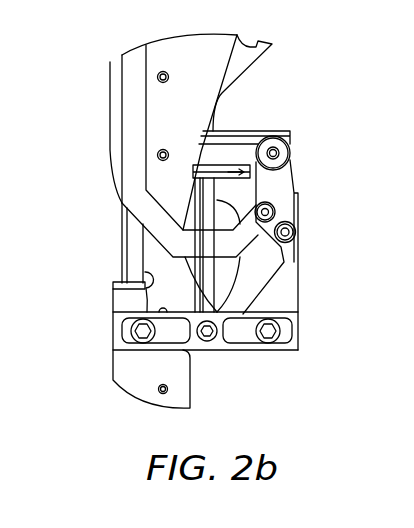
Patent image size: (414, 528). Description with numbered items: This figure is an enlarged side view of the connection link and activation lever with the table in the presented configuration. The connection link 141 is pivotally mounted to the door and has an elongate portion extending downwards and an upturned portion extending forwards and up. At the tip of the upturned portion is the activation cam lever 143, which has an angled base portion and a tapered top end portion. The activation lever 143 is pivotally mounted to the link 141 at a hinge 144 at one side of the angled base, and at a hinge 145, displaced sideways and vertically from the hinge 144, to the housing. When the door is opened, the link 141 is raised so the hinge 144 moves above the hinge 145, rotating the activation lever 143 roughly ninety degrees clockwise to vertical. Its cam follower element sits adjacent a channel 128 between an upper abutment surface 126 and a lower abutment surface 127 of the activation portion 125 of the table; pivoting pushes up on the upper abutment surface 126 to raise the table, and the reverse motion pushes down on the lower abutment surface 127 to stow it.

The activation portion 125 is at (302, 232).
The upper abutment surface 126 is at (228, 148).
The lower abutment surface 127 is at (290, 157).
The channel 128 is at (253, 140).
The connection link 141 is at (130, 122).
The activation cam lever 143 is at (288, 178).
The hinge 144 is at (275, 211).
The hinge 145 is at (296, 232).